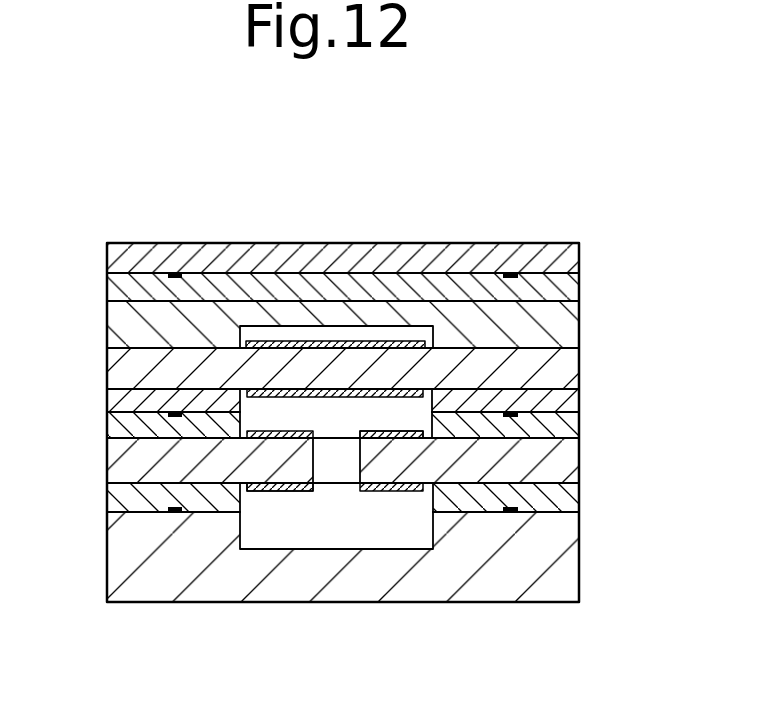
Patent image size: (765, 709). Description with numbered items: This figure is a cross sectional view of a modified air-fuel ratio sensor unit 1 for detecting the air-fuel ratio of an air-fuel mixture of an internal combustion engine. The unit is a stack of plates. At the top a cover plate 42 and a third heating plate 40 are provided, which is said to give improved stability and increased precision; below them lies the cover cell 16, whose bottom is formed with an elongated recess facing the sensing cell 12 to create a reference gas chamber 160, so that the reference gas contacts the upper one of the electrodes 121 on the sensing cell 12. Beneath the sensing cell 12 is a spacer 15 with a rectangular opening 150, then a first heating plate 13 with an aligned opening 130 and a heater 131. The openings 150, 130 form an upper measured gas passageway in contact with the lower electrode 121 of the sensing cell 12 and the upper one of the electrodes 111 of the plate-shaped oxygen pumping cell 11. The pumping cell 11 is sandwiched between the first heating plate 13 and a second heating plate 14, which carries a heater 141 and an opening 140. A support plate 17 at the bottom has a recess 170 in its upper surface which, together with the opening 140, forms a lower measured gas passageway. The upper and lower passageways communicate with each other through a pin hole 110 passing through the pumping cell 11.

The air-fuel ratio sensor unit 1 is at (315, 210).
The cover plate 42 is at (548, 249).
The third heating plate 40 is at (570, 283).
The cover cell 16 is at (570, 327).
The reference gas chamber 160 is at (355, 332).
The electrodes 121 is at (300, 392).
The sensing cell 12 is at (570, 370).
The spacer 15 is at (570, 406).
The opening 150 is at (229, 389).
The first heating plate 13 is at (570, 431).
The opening 130 is at (245, 403).
The heater 131 is at (248, 433).
The oxygen pumping cell 11 is at (570, 463).
The pin hole 110 is at (330, 467).
The second heating plate 14 is at (570, 500).
The opening 140 is at (243, 503).
The heater 141 is at (256, 507).
The support plate 17 is at (570, 565).
The recess 170 is at (250, 535).
The electrodes 111 is at (295, 490).